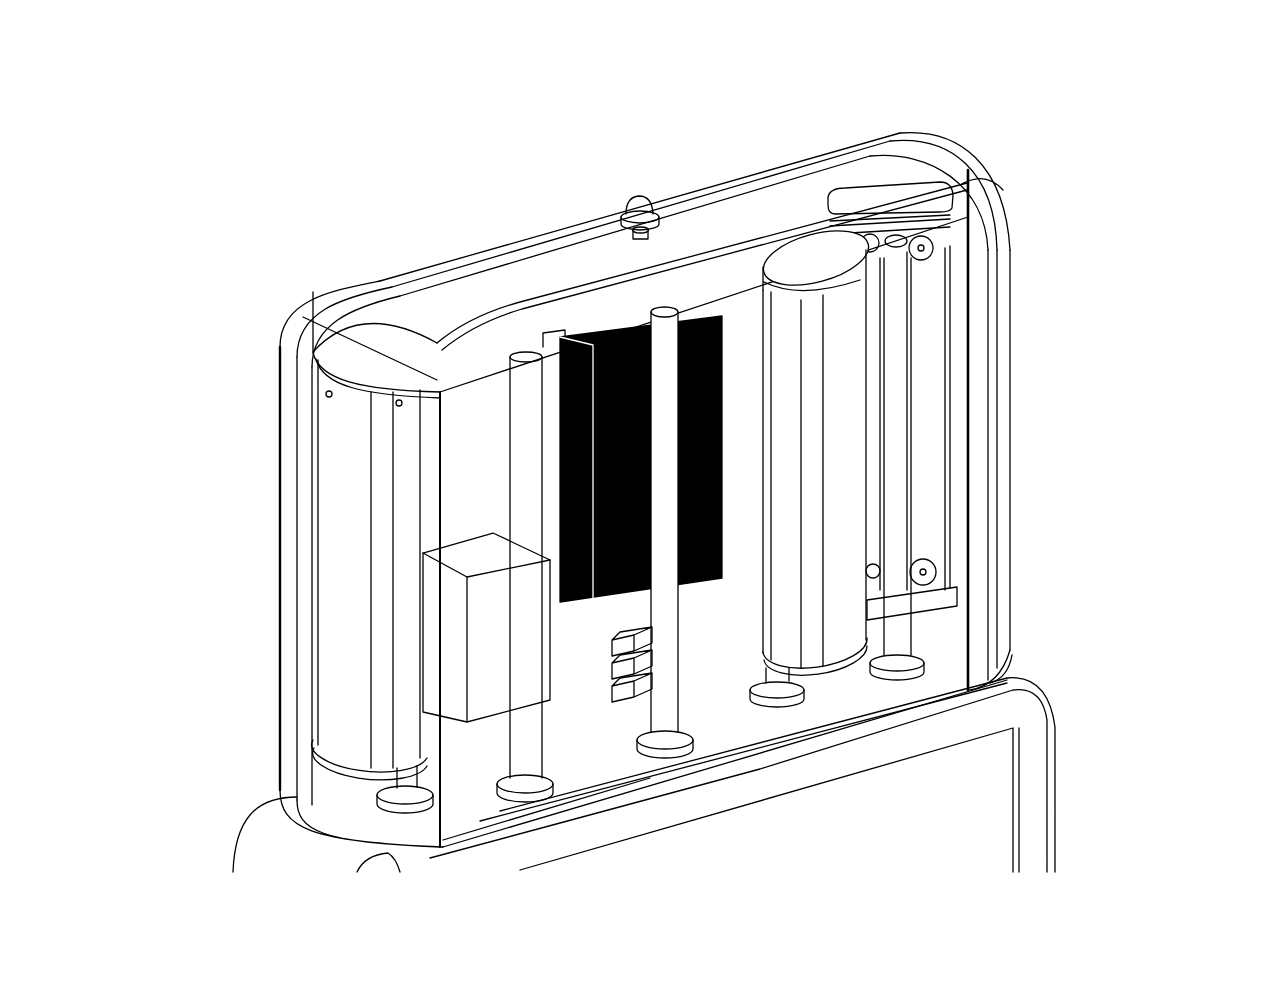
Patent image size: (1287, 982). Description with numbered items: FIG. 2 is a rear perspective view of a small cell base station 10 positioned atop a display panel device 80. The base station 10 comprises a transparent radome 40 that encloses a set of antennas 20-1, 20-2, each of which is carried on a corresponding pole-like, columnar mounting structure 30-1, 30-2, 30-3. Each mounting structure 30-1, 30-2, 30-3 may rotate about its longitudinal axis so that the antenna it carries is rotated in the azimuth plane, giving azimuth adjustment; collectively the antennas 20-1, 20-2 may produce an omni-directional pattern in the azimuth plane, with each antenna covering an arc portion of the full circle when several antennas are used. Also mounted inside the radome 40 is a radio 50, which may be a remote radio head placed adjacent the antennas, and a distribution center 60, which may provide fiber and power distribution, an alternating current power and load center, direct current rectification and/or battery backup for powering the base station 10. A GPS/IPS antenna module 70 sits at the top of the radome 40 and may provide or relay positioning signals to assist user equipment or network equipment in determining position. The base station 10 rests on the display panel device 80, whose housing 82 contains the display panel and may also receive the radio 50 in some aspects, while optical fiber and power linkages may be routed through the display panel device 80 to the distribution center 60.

The small cell base station 10 is at (275, 150).
The antenna 20-1 is at (400, 468).
The antenna 20-2 is at (816, 247).
The mounting structure 30-1 is at (897, 283).
The mounting structure 30-2 is at (765, 265).
The mounting structure 30-3 is at (393, 779).
The radome 40 is at (310, 299).
The radio 50 is at (701, 317).
The distribution center 60 is at (445, 584).
The GPS/IPS antenna module 70 is at (636, 197).
The display panel device 80 is at (1017, 744).
The housing 82 is at (1053, 770).